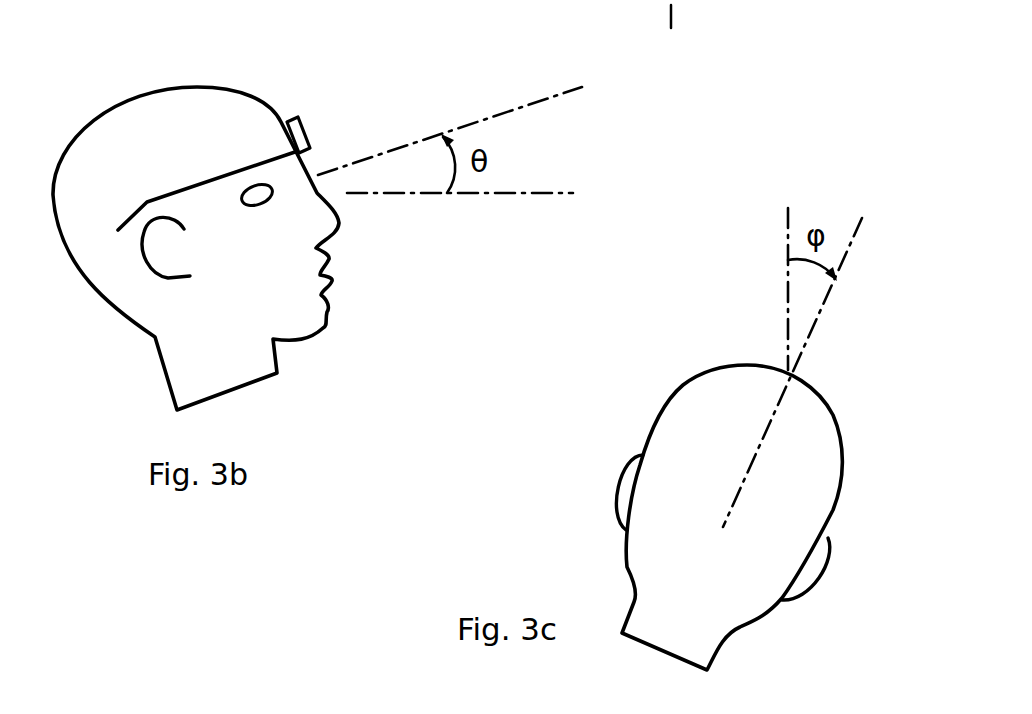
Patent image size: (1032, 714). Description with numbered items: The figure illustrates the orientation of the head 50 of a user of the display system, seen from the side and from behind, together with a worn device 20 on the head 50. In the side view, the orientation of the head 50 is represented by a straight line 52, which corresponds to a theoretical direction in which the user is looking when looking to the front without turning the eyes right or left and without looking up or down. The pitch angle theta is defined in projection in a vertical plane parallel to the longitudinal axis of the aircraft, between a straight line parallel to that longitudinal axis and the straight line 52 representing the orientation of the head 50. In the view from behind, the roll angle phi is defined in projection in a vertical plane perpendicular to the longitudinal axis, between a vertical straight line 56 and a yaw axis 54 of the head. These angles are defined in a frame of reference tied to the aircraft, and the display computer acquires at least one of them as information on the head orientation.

In FIG. 3B, the head 50 is at (190, 88).
In FIG. 3C, the head 50 is at (710, 375).
In FIG. 3B, the head-mounted device 20 is at (303, 119).
In FIG. 3B, the straight line 52 is at (493, 115).
In FIG. 3C, the vertical straight line 56 is at (787, 227).
In FIG. 3C, the yaw axis 54 is at (823, 306).